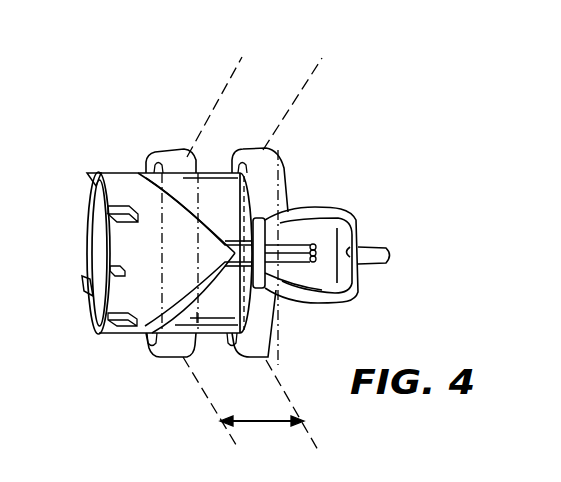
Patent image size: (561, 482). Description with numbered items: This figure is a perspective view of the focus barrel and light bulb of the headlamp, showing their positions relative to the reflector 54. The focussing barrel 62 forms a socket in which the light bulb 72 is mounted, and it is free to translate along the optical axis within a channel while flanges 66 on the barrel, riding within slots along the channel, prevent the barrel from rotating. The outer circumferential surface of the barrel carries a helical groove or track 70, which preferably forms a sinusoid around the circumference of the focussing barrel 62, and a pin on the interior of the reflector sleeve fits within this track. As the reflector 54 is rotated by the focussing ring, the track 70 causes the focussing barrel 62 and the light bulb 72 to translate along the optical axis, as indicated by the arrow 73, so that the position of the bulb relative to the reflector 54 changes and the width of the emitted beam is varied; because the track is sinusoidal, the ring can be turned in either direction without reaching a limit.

The reflector 54 is at (262, 170).
The focussing barrel 62 is at (138, 306).
The flanges 66 is at (96, 178).
The helical groove or track 70 is at (175, 200).
The light bulb 72 is at (343, 230).
The arrow 73 is at (270, 424).